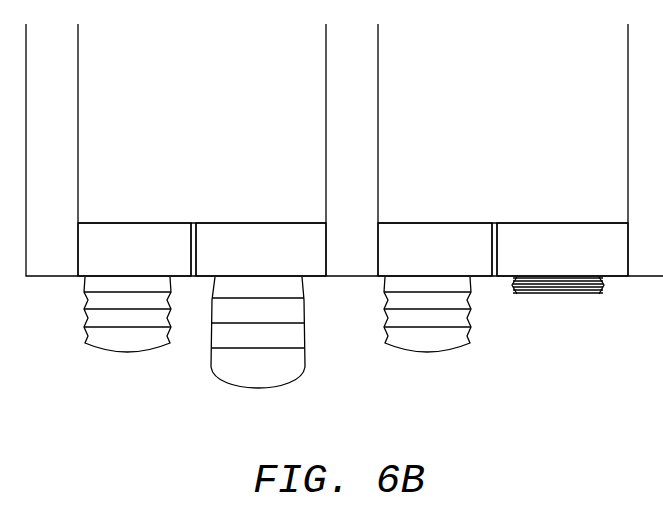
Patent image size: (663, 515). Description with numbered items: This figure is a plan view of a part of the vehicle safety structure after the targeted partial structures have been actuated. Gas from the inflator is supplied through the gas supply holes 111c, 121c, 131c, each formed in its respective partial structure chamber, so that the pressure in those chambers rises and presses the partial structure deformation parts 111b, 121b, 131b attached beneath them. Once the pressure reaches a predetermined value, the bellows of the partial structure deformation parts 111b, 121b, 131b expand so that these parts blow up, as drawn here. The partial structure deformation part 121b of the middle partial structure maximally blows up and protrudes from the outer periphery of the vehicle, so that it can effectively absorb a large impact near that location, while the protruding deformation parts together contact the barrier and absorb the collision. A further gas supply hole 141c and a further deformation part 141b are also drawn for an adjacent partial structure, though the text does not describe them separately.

The gas supply hole 111c is at (130, 222).
The gas supply hole 121c is at (250, 222).
The gas supply hole 131c is at (420, 222).
The fourth contact portion 141c is at (553, 222).
The partial structure deformation part 111b is at (130, 355).
The partial structure deformation part 121b is at (258, 388).
The partial structure deformation part 131b is at (430, 355).
The fourth fastening member (adhesive layer) 141b is at (558, 296).